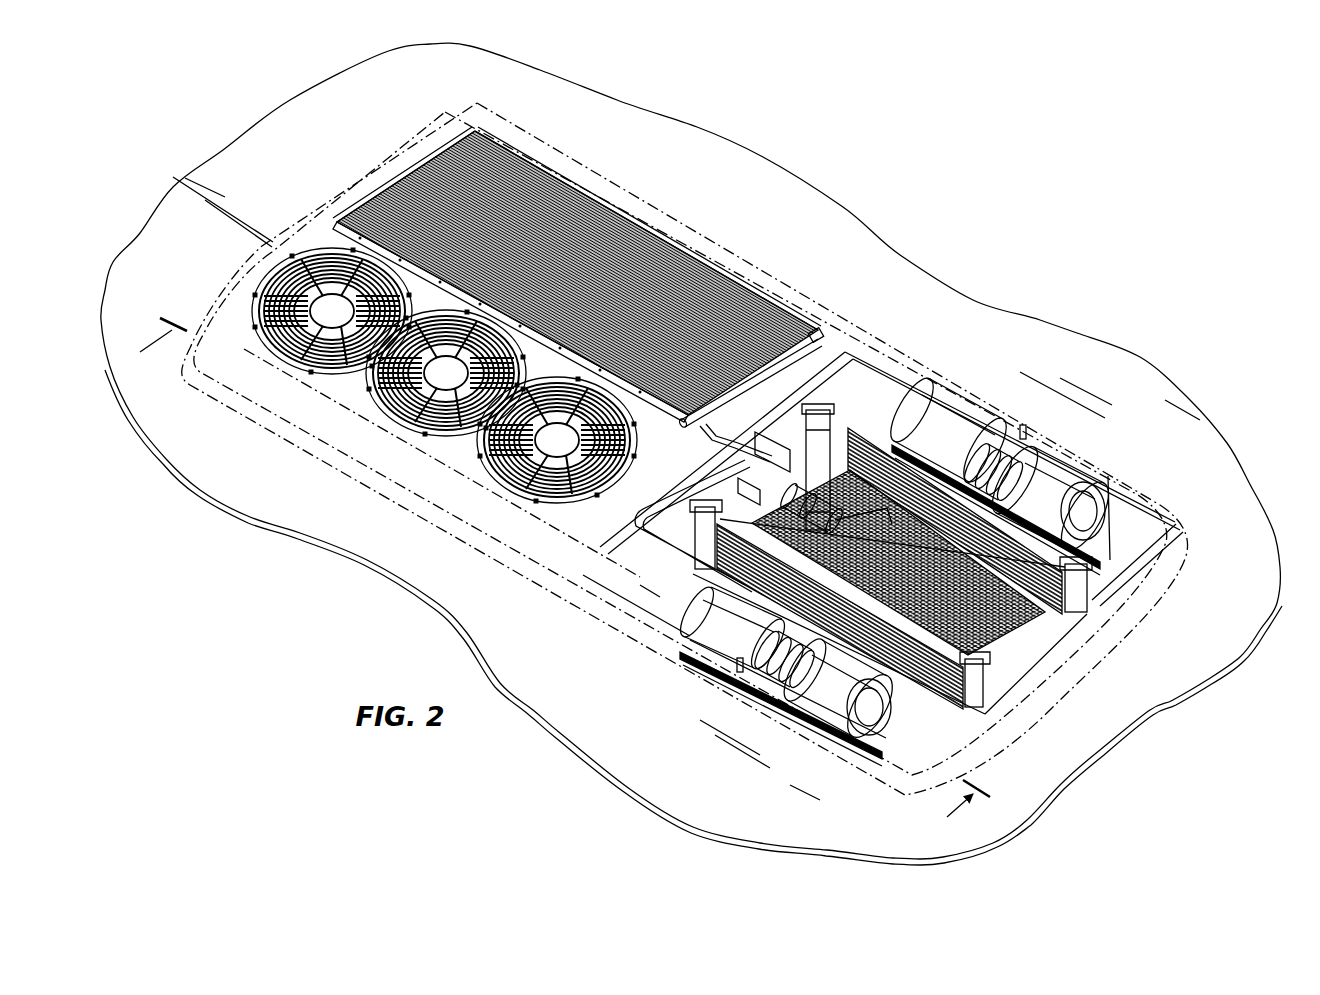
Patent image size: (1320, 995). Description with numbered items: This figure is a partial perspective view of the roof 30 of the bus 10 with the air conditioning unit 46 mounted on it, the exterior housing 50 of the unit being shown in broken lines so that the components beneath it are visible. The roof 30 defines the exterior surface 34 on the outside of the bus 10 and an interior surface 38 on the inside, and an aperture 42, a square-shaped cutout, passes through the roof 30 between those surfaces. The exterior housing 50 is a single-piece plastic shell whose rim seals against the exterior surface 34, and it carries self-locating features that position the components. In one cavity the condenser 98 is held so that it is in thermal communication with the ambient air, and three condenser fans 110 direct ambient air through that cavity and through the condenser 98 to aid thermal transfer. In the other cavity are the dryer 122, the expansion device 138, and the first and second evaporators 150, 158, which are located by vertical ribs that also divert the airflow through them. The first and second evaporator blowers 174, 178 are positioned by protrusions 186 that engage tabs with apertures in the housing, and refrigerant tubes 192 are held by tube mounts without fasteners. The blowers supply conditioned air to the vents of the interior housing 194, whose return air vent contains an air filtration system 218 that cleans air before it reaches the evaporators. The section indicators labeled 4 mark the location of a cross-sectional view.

The section line 4 is at (561, 580).
The bus 10 is at (896, 178).
The roof 30 is at (1215, 472).
The exterior surface 34 is at (1202, 558).
The interior surface 38 is at (613, 592).
The aperture 42 is at (590, 570).
The air conditioning unit 46 is at (343, 148).
The exterior housing 50 is at (437, 117).
The condenser 98 is at (610, 263).
The condenser fans 110 is at (500, 452).
The dryer 122 is at (931, 547).
The expansion device 138 is at (822, 404).
The first evaporator 150 is at (1072, 602).
The second evaporator 158 is at (975, 700).
The first evaporator blower 174 is at (1070, 480).
The second evaporator blower 178 is at (835, 692).
The protrusions 186 is at (940, 377).
The refrigerant tubes 192 is at (630, 495).
The interior housing 194 is at (995, 672).
The air filtration system 218 is at (1000, 618).